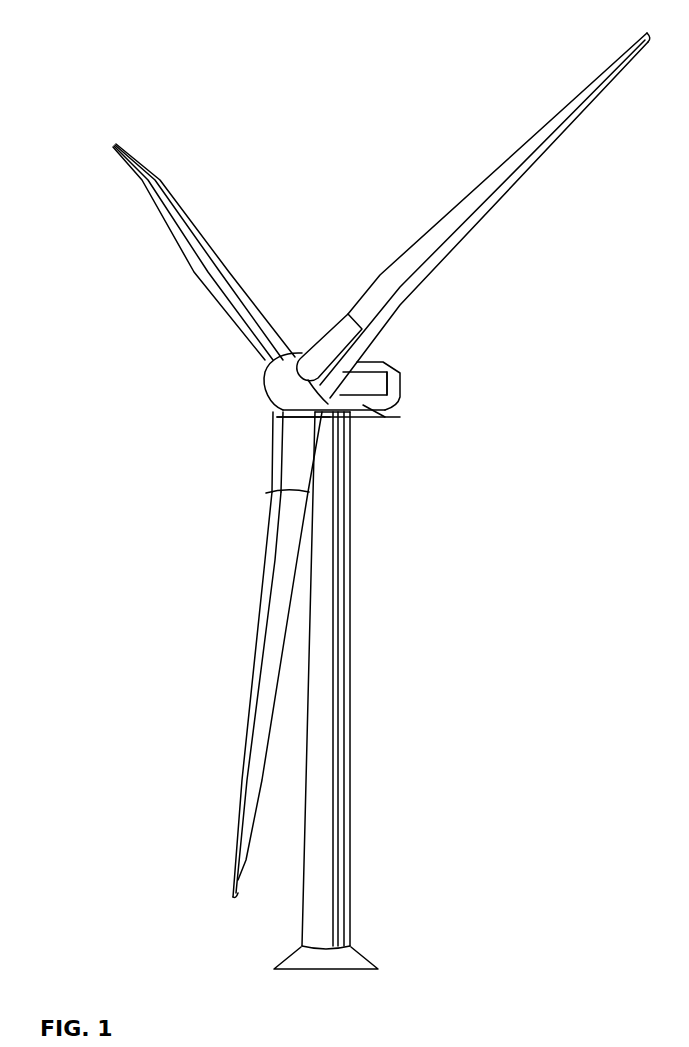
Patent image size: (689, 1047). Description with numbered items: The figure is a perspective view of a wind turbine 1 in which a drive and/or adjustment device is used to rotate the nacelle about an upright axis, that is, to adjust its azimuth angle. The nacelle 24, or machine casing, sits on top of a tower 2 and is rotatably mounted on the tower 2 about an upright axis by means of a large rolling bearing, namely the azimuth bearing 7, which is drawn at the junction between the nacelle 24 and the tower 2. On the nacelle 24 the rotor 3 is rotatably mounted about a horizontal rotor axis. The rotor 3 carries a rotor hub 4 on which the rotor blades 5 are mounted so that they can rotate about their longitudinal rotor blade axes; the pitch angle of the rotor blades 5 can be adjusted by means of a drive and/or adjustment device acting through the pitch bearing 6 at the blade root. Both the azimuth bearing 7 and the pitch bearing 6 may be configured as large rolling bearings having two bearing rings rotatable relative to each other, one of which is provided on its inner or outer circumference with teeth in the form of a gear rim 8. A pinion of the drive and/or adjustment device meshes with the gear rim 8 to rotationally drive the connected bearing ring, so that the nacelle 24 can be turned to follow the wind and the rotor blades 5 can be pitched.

The wind turbine 1 is at (143, 428).
The tower 2 is at (334, 698).
The rotor 3 is at (278, 423).
The rotor hub 4 is at (266, 384).
The rotor blades 5 is at (530, 176).
The pitch bearing 6 is at (306, 346).
The azimuth bearing 7 is at (350, 432).
The gear rim 8 is at (277, 417).
The nacelle 24 is at (400, 417).